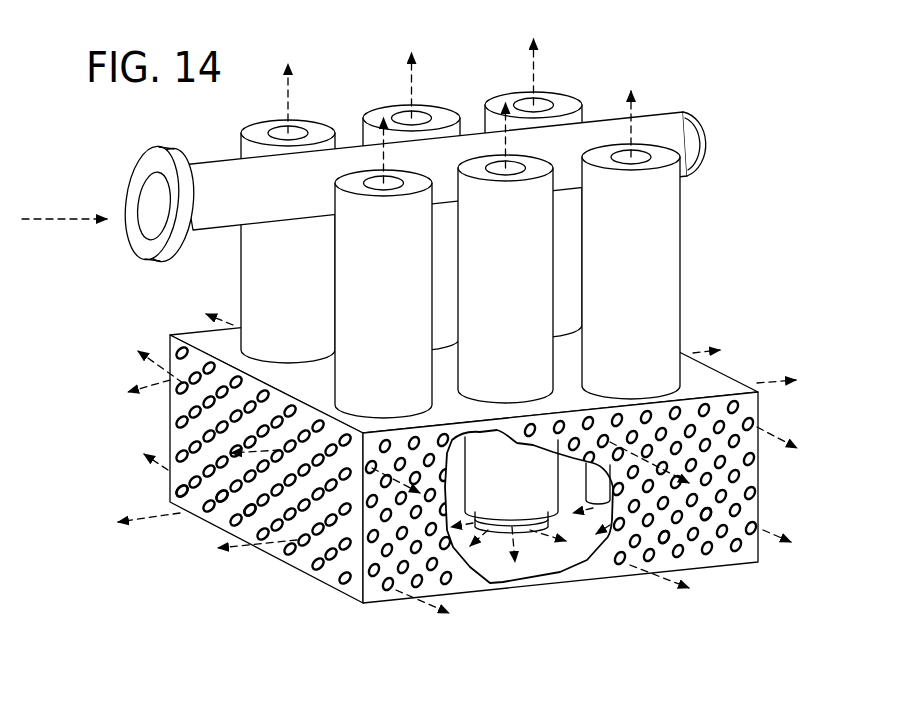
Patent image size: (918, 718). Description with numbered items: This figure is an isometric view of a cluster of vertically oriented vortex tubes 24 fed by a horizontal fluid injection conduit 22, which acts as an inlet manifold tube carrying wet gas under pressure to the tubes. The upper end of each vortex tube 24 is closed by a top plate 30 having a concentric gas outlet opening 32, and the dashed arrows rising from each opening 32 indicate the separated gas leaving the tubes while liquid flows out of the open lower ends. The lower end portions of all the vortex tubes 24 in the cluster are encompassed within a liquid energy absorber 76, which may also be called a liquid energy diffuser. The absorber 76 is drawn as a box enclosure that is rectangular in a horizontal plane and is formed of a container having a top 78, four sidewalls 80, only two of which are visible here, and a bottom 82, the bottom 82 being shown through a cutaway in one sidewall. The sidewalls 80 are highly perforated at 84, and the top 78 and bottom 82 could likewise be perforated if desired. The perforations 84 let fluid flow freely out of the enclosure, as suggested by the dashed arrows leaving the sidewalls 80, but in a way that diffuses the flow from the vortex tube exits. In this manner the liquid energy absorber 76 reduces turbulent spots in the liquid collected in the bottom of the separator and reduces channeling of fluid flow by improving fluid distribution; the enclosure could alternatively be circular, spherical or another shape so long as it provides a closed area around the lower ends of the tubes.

The fluid injection conduit 22 is at (225, 170).
The vortex tube 24 is at (448, 242).
The top plate 30 is at (302, 122).
The gas outlet opening 32 is at (632, 157).
The liquid energy absorber 76 is at (448, 488).
The top 78 is at (714, 384).
The sidewalls 80 is at (752, 473).
The bottom 82 is at (542, 556).
The perforations 84 is at (250, 514).